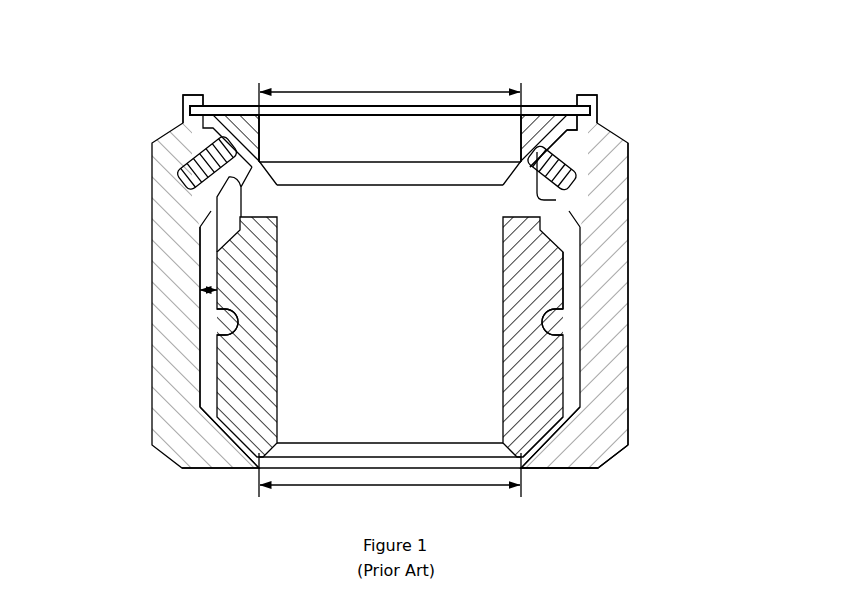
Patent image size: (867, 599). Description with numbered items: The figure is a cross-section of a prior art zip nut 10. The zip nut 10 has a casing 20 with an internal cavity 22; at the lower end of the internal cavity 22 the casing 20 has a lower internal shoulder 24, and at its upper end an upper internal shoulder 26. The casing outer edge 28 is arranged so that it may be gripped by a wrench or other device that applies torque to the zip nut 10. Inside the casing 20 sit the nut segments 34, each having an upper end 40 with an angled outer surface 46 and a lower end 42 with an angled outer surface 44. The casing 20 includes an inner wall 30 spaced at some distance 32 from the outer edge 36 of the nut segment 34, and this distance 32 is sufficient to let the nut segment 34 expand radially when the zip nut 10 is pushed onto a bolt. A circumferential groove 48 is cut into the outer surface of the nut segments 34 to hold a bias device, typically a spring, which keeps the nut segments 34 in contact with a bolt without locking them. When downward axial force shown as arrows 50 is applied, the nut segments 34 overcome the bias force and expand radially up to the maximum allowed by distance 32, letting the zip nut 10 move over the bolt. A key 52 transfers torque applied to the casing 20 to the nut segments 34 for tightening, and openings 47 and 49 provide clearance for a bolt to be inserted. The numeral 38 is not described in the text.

The zip nut 10 is at (656, 302).
The casing 20 is at (618, 248).
The internal cavity 22 is at (250, 240).
The lower internal shoulder 24 is at (210, 420).
The upper internal shoulder 26 is at (556, 165).
The casing outer edge 28 is at (628, 270).
The inner wall 30 is at (212, 273).
The distance 32 is at (199, 290).
The nut segment 34 is at (212, 243).
The outer edge of the nut segment 36 is at (565, 300).
The insert wall 38 is at (530, 340).
The upper end 40 is at (577, 130).
The lower end 42 is at (527, 425).
The outer surface 44 is at (542, 437).
The outer surface 46 is at (548, 176).
The opening 47 is at (452, 485).
The circumferential groove 48 is at (224, 322).
The opening 49 is at (400, 93).
The arrows 50 is at (192, 93).
The key 52 is at (217, 165).